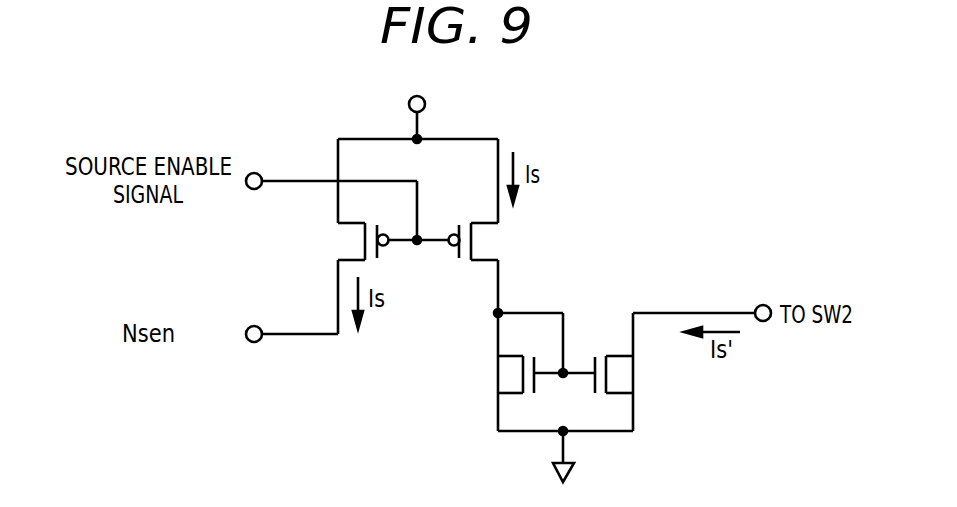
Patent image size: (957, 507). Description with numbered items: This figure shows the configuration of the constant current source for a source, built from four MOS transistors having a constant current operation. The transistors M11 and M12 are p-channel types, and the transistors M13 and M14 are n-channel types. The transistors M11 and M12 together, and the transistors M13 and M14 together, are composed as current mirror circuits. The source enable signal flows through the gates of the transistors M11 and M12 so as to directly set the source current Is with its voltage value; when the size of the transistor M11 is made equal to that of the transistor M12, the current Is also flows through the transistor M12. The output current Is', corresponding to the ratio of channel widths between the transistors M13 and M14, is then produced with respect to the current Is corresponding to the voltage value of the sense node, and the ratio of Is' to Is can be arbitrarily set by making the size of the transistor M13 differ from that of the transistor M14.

The transistor M11 is at (343, 241).
The transistor M12 is at (493, 241).
The transistor M13 is at (494, 374).
The transistor M14 is at (632, 374).